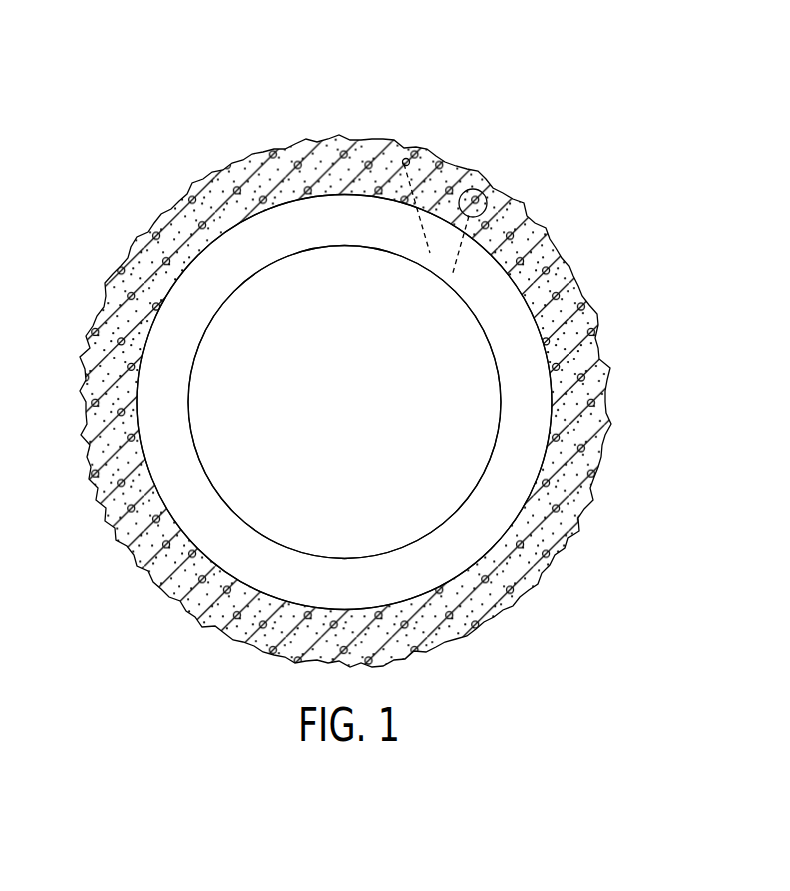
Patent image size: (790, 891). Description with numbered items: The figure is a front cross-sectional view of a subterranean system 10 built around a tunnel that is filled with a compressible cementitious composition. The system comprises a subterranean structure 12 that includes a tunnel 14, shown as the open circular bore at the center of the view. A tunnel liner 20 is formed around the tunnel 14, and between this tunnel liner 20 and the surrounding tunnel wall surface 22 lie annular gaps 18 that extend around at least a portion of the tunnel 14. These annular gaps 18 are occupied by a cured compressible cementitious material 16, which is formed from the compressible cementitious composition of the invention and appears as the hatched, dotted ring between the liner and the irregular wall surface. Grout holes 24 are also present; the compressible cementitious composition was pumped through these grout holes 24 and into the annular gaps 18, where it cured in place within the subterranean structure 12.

The subterranean system 10 is at (486, 74).
The subterranean structure 12 is at (117, 241).
The tunnel 14 is at (356, 411).
The cured compressible cementitious material 16 is at (185, 208).
The annular gaps 18 is at (349, 192).
The tunnel liner 20 is at (518, 348).
The tunnel wall surface 22 is at (256, 160).
The grout holes 24 is at (406, 160).